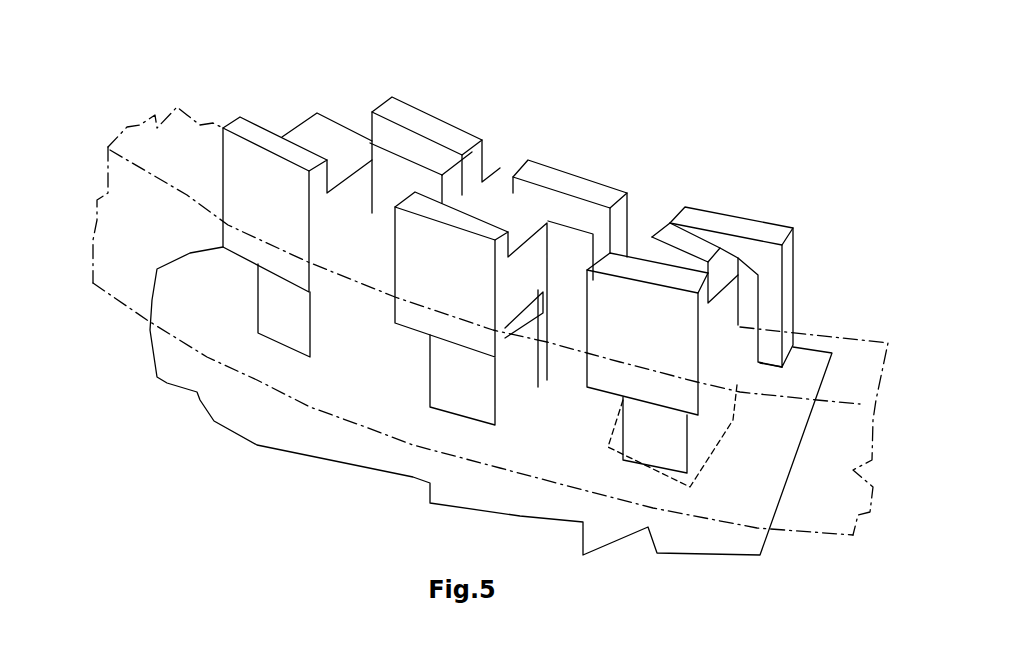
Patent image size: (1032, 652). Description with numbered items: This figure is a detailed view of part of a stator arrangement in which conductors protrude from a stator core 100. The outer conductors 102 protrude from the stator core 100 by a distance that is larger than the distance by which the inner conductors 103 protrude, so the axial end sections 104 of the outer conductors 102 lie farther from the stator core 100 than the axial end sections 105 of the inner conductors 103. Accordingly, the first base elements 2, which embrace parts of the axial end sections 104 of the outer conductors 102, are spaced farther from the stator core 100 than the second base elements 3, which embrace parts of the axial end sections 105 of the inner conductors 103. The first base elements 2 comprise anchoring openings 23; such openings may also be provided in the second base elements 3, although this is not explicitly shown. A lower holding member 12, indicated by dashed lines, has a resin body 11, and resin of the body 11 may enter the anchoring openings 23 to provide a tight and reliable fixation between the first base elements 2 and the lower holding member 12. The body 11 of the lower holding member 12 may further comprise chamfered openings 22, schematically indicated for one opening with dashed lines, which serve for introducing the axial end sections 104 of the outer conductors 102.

The first base element 2 is at (425, 273).
The second base element 3 is at (500, 206).
The body 11 is at (130, 242).
The lower holding member 12 is at (197, 141).
The chamfered opening 22 is at (708, 462).
The anchoring opening 23 is at (532, 314).
The stator core 100 is at (455, 480).
The outer conductor 102 is at (657, 447).
The inner conductor 103 is at (747, 345).
The axial end section of outer conductor 104 is at (503, 210).
The axial end section of inner conductor 105 is at (403, 177).